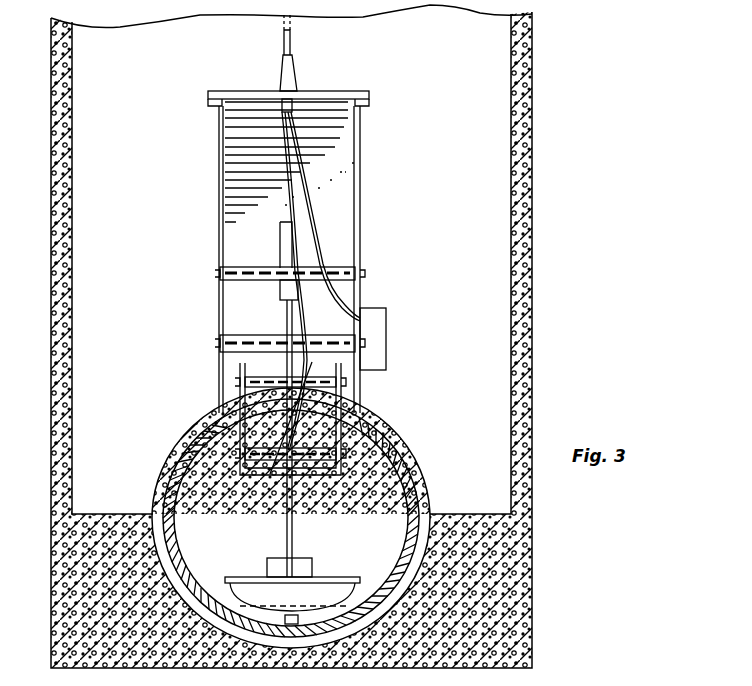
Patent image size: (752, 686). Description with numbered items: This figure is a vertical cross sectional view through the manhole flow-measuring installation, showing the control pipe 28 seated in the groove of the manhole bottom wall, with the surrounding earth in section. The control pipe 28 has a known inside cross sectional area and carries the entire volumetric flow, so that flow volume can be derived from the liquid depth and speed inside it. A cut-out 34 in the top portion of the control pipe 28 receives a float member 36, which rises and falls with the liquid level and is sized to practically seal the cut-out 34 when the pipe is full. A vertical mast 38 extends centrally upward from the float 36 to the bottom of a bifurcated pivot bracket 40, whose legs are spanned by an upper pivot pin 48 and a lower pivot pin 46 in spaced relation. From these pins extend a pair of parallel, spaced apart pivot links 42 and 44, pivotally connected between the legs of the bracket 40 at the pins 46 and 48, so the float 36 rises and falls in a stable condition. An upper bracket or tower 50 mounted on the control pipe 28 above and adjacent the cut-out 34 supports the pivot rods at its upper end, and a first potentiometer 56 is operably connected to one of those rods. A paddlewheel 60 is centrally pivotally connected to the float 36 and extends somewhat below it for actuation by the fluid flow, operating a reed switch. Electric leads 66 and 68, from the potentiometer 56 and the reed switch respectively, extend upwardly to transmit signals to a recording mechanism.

The control pipe 28 is at (182, 463).
The cut-out 34 is at (388, 432).
The float member 36 is at (313, 575).
The vertical mast 38 is at (284, 522).
The pivot bracket 40 is at (320, 475).
The pivot link 42 is at (288, 440).
The pivot link 44 is at (287, 320).
The lower pivot pin 46 is at (281, 429).
The upper pivot pin 48 is at (283, 377).
The upper bracket or tower 50 is at (362, 170).
The first potentiometer 56 is at (387, 350).
The paddlewheel 60 is at (292, 614).
The electric lead 66 is at (310, 230).
The electric lead 68 is at (278, 226).